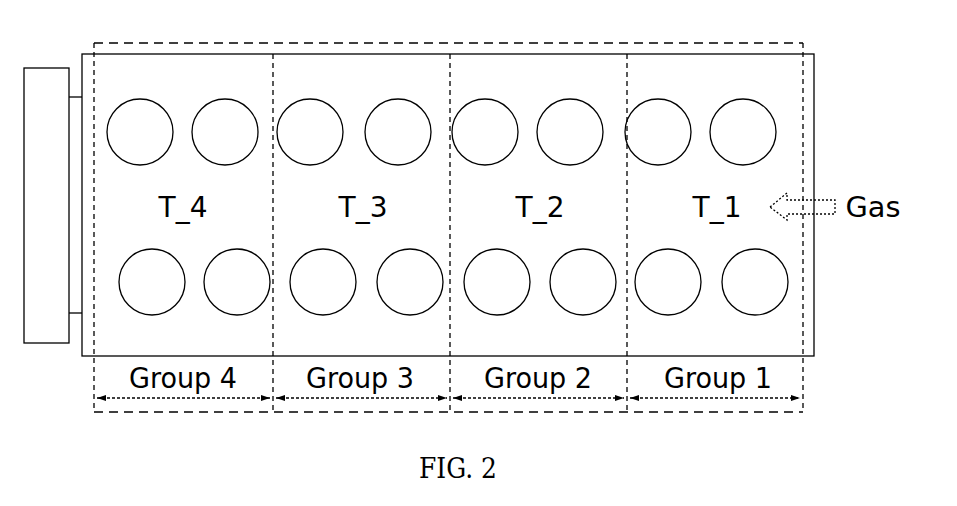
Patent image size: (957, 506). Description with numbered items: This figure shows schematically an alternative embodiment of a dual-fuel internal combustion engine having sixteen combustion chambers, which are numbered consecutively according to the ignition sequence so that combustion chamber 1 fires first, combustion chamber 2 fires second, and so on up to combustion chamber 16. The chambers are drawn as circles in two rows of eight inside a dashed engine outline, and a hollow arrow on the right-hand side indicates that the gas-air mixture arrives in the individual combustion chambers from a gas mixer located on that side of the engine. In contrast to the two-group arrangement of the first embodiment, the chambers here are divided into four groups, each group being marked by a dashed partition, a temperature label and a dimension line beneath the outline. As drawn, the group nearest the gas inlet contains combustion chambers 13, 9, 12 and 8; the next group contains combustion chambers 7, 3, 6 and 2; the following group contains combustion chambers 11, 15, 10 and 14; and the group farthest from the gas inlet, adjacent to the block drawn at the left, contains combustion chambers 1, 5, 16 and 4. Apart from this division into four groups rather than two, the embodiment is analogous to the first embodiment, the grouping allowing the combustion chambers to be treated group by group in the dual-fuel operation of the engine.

The combustion chamber 1 is at (140, 132).
The combustion chamber 2 is at (583, 282).
The combustion chamber 3 is at (570, 132).
The combustion chamber 4 is at (237, 282).
The combustion chamber 5 is at (225, 132).
The combustion chamber 6 is at (497, 282).
The combustion chamber 7 is at (485, 132).
The combustion chamber 8 is at (755, 282).
The combustion chamber 9 is at (743, 132).
The combustion chamber 10 is at (323, 282).
The combustion chamber 11 is at (310, 132).
The combustion chamber 12 is at (668, 282).
The combustion chamber 13 is at (658, 132).
The combustion chamber 14 is at (410, 282).
The combustion chamber 15 is at (398, 132).
The combustion chamber 16 is at (152, 282).